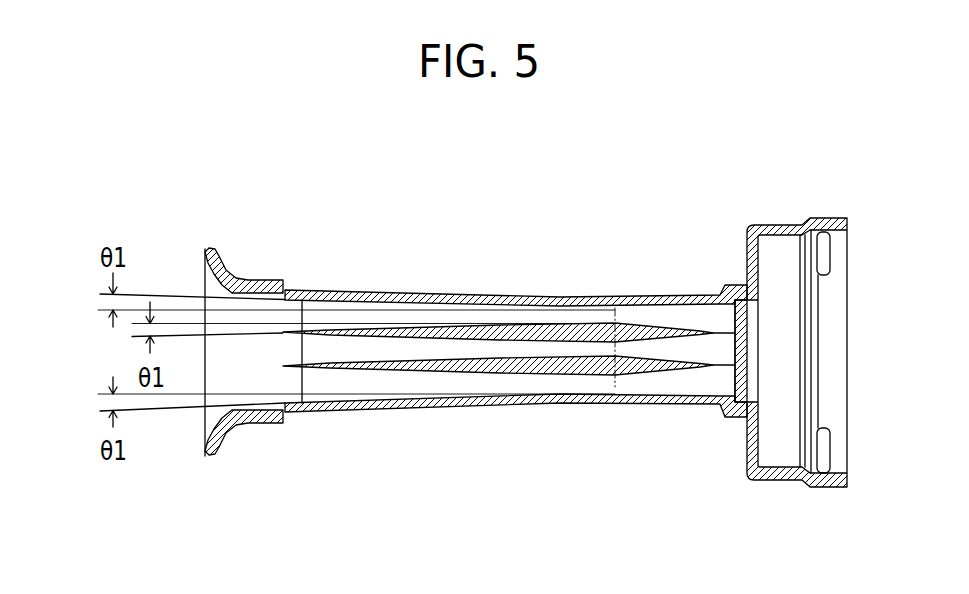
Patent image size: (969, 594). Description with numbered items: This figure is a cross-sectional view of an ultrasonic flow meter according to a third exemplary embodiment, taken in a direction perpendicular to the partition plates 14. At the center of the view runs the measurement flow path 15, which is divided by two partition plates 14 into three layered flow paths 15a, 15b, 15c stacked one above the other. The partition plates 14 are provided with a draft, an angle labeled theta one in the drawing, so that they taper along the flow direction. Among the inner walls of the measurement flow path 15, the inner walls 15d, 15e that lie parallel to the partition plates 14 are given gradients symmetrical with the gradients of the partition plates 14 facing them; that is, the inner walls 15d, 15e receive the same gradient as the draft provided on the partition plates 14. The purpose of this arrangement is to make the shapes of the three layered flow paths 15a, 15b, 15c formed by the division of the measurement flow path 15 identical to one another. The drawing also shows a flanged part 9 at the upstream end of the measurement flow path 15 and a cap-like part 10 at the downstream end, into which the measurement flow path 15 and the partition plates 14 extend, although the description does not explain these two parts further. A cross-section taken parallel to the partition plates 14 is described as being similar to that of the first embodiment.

The nozzle flange 9 is at (253, 280).
The cap 10 is at (772, 225).
The partition plate 14 is at (594, 333).
The measurement flow path 15 is at (465, 297).
The layered flow path 15a is at (485, 317).
The layered flow path 15b is at (400, 348).
The layered flow path 15c is at (470, 384).
The inner wall 15d is at (283, 280).
The inner wall 15e is at (283, 280).